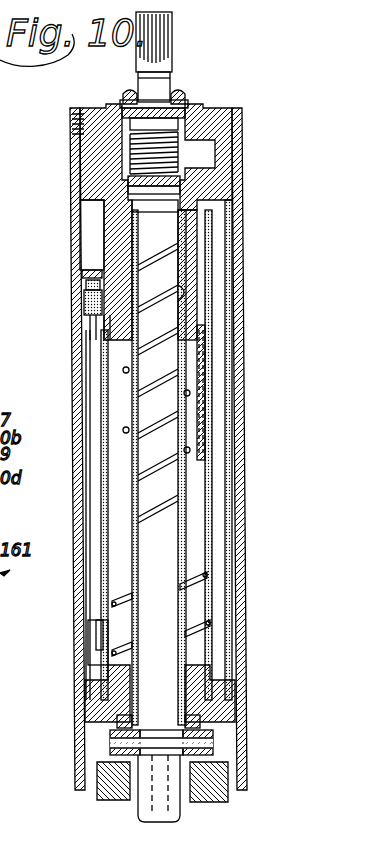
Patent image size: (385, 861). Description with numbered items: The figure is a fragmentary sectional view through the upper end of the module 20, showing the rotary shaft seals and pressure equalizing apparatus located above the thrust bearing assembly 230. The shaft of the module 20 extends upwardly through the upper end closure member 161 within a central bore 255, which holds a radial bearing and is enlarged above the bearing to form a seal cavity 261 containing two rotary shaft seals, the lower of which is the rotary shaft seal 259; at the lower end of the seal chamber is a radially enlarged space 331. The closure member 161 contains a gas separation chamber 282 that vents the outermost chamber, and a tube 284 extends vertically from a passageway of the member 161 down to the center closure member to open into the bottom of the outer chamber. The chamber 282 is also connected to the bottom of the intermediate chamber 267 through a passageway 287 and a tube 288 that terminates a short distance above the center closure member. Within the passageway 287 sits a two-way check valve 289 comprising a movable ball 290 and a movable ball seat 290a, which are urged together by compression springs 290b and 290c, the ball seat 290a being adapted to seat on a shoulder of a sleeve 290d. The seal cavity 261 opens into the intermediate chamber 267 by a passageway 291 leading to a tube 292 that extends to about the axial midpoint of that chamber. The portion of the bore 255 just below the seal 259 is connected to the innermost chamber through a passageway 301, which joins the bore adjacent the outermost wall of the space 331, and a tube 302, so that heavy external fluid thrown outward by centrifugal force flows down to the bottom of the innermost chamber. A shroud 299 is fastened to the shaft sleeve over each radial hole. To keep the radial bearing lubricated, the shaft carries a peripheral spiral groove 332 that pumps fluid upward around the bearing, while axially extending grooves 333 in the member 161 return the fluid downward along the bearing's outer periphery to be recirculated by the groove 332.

The module 20 is at (70, 279).
The upper end closure member 161 is at (95, 108).
The enlarged seal cavity 261 is at (205, 138).
The central bore 255 is at (190, 170).
The rotary shaft seal 259 is at (120, 195).
The radially enlarged space 331 is at (200, 210).
The gas separation chamber 282 is at (88, 213).
The compression spring 290c is at (80, 268).
The two-way check valve 289 is at (96, 288).
The passageway 287 is at (84, 300).
The sleeve 290d is at (105, 318).
The movable ball 290 is at (168, 275).
The axially extending grooves 333 is at (134, 246).
The movable ball seat 290a is at (100, 280).
The compression spring 290b is at (130, 320).
The passageway 291 is at (213, 248).
The passageway 301 is at (222, 266).
The tube 292 is at (218, 370).
The tube 288 is at (95, 403).
The intermediate chamber 267 is at (98, 663).
The peripheral spiral groove 332 is at (160, 497).
The shroud 299 is at (134, 470).
The tube 302 is at (192, 456).
The tube 284 is at (225, 690).
The thrust bearing assembly 230 is at (222, 808).